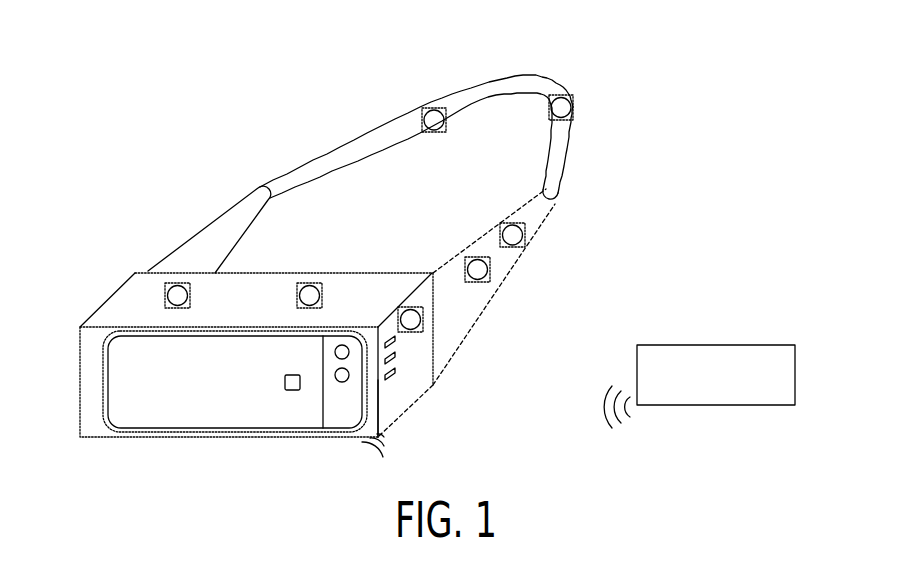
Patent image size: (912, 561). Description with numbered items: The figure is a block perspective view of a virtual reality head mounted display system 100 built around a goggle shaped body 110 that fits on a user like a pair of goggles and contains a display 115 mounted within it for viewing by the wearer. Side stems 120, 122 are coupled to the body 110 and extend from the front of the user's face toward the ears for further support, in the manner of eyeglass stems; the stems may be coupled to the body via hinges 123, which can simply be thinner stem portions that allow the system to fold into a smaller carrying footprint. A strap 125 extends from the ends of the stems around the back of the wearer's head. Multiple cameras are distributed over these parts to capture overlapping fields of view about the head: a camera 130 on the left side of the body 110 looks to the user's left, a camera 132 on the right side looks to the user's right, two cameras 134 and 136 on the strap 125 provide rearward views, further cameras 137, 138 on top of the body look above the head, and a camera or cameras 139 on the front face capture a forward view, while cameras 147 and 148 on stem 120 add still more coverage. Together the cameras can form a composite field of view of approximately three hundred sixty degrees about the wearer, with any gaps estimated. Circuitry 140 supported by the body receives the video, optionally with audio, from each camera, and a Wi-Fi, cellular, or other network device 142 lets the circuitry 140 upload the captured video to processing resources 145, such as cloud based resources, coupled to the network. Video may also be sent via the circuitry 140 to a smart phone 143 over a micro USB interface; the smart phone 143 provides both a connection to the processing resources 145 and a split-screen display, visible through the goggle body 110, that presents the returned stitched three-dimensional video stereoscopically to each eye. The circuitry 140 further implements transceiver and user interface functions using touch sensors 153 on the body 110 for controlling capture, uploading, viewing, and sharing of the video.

The virtual reality head mounted display system 100 is at (756, 54).
The goggle shaped body 110 is at (376, 273).
The display 115 is at (380, 400).
The side stem 120 is at (518, 261).
The side stem 122 is at (246, 197).
The hinges 123 is at (433, 288).
The strap 125 is at (568, 146).
The camera 130 is at (423, 318).
The camera 132 is at (102, 302).
The camera 134 is at (575, 108).
The camera 136 is at (422, 111).
The camera 137 is at (170, 283).
The camera 138 is at (320, 283).
The cameras 139 is at (335, 374).
The circuitry 140 is at (103, 424).
The network device 142 is at (384, 437).
The smart phone 143 is at (157, 430).
The processing resources 145 is at (757, 345).
The camera 147 is at (467, 258).
The camera 148 is at (503, 224).
The touch sensors 153 is at (397, 340).